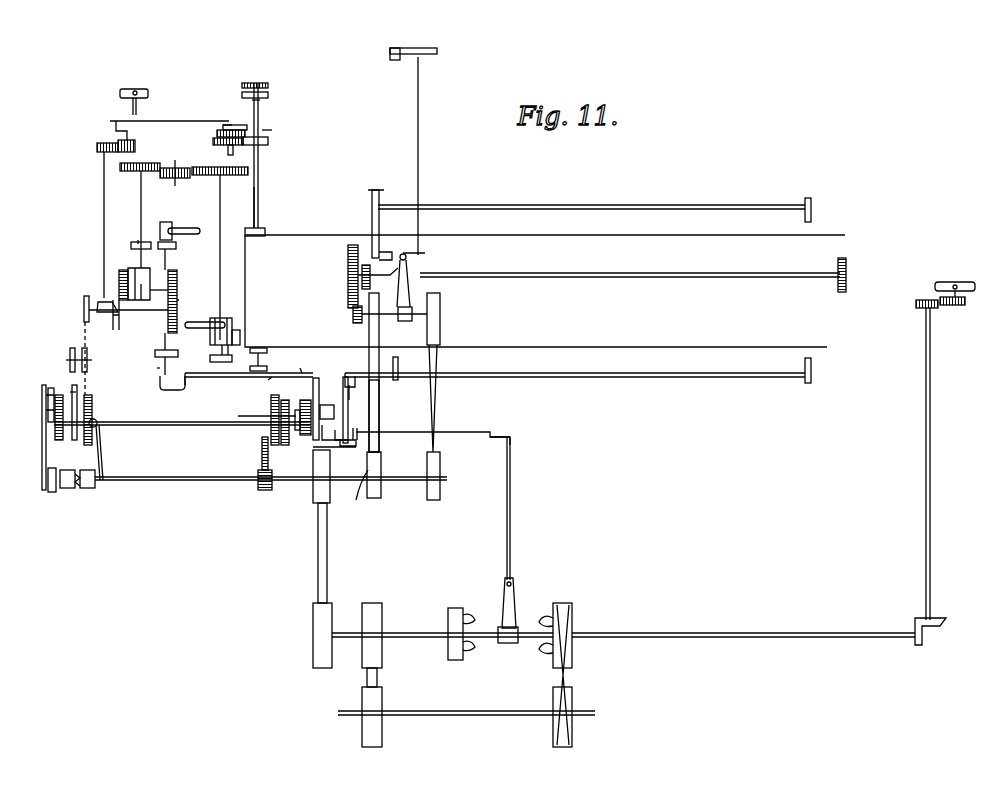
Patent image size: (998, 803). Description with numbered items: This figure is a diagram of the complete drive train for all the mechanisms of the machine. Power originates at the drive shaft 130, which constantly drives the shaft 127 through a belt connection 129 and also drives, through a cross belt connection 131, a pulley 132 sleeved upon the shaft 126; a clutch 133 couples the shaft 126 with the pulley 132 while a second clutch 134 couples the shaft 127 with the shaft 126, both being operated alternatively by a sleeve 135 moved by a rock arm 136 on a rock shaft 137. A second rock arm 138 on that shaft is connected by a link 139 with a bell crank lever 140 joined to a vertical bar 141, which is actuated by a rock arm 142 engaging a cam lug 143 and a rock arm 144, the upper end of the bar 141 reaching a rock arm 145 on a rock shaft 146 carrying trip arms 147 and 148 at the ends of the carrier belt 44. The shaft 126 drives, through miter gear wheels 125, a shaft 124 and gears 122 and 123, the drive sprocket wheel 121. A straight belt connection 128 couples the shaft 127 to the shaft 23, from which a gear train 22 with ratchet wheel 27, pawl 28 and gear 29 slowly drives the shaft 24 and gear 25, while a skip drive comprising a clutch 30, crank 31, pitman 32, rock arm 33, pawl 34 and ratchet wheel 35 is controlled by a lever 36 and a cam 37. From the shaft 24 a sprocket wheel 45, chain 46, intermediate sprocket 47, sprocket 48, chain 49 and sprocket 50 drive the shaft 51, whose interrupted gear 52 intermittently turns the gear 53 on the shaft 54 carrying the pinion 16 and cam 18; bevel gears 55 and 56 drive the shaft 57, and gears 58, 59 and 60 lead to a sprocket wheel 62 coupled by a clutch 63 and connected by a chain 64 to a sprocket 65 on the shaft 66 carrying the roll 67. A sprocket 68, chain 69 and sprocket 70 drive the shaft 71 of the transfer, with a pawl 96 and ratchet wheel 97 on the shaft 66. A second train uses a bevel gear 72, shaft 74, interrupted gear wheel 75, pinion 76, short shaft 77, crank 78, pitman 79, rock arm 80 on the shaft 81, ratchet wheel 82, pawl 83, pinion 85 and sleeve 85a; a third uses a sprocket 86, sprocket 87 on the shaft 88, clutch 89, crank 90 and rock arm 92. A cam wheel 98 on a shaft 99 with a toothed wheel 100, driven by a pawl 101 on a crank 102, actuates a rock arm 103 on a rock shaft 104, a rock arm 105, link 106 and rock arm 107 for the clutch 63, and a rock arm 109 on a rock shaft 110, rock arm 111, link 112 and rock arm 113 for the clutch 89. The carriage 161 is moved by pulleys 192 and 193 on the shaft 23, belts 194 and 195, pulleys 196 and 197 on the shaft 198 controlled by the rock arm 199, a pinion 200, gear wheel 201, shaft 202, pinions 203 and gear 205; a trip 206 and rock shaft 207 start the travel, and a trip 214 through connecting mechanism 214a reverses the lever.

The pinion 16 is at (117, 277).
The cam 18 is at (128, 271).
The gear train 22 is at (260, 455).
The shaft 23 is at (181, 482).
The shaft 24 is at (185, 427).
The gear 25 is at (93, 413).
The ratchet wheel 27 is at (265, 489).
The pawl 28 is at (280, 413).
The gear 29 is at (279, 409).
The clutch 30 is at (77, 487).
The crank 31 is at (53, 492).
The pitman 32 is at (41, 457).
The rock arm 33 is at (45, 410).
The pawl 34 is at (47, 397).
The ratchet wheel 35 is at (60, 442).
The lever 36 is at (104, 450).
The cam 37 is at (97, 420).
The carrier belt 44 is at (545, 291).
The sprocket wheel 45 is at (80, 398).
The chain 46 is at (72, 392).
The intermediate sprocket 47 is at (68, 357).
The sprocket 48 is at (88, 358).
The chain 49 is at (91, 341).
The sprocket 50 is at (82, 310).
The shaft 51 is at (160, 318).
The interrupted gear 52 is at (178, 301).
The gear 53 is at (178, 276).
The shaft 54 is at (140, 295).
The bevel gear 55 is at (155, 304).
The bevel gear 56 is at (138, 266).
The shaft 57 is at (143, 196).
The gear 58 is at (145, 162).
The gear 59 is at (178, 166).
The gear 60 is at (208, 166).
The sprocket wheel 62 is at (216, 364).
The clutch 63 is at (232, 326).
The chain 64 is at (234, 364).
The sprocket 65 is at (268, 363).
The shaft 66 is at (260, 212).
The roll 67 is at (266, 232).
The sprocket 68 is at (270, 94).
The chain 69 is at (178, 94).
The sprocket 70 is at (118, 93).
The shaft 71 is at (132, 104).
The bevel gear 72 is at (112, 326).
The shaft 74 is at (103, 210).
The interrupted gear wheel 75 is at (95, 150).
The pinion 76 is at (132, 141).
The short shaft 77 is at (115, 134).
The crank 78 is at (108, 123).
The pitman 79 is at (190, 108).
The rock arm 80 is at (236, 120).
The shaft 81 is at (236, 151).
The ratchet wheel 82 is at (270, 141).
The pawl 83 is at (246, 128).
The pinion 85 is at (268, 138).
The sleeve 85a is at (262, 110).
The sprocket 86 is at (138, 240).
The sprocket 87 is at (177, 243).
The shaft 88 is at (168, 258).
The clutch 89 is at (172, 222).
The crank 90 is at (157, 368).
The rock arm 92 is at (241, 340).
The pawl 96 is at (262, 88).
The ratchet wheel 97 is at (257, 81).
The cam wheel 98 is at (319, 382).
The shaft 99 is at (326, 405).
The toothed wheel 100 is at (253, 415).
The pawl 101 is at (305, 436).
The crank 102 is at (297, 432).
The rock arm 103 is at (342, 377).
The rock shaft 104 is at (291, 362).
The rock arm 105 is at (185, 383).
The link 106 is at (163, 344).
The rock arm 107 is at (207, 320).
The rock arm 109 is at (249, 369).
The rock shaft 110 is at (260, 383).
The rock arm 111 is at (165, 387).
The link 112 is at (167, 364).
The rock arm 113 is at (196, 229).
The drive sprocket wheel 121 is at (960, 280).
The gear 122 is at (962, 306).
The gear 123 is at (915, 307).
The shaft 124 is at (932, 400).
The miter gear wheels 125 is at (933, 628).
The shaft 126 is at (785, 640).
The shaft 127 is at (410, 630).
The straight belt connection 128 is at (317, 545).
The belt connection 129 is at (383, 670).
The drive shaft 130 is at (474, 718).
The cross belt connection 131 is at (575, 674).
The pulley 132 is at (575, 624).
The clutch 133 is at (541, 611).
The clutch 134 is at (470, 612).
The sleeve 135 is at (508, 644).
The rock arm 136 is at (516, 598).
The rock shaft 137 is at (511, 512).
The rock arm 138 is at (510, 434).
The link 139 is at (466, 431).
The bell crank lever 140 is at (352, 491).
The vertical bar 141 is at (350, 398).
The rock arm 142 is at (335, 445).
The cam lug 143 is at (348, 416).
The rock arm 144 is at (348, 428).
The rock arm 145 is at (349, 372).
The rock shaft 146 is at (522, 372).
The trip arm 147 is at (399, 368).
The trip arm 148 is at (804, 366).
The carriage 161 is at (221, 220).
The pulley 192 is at (383, 490).
The pulley 193 is at (441, 495).
The straight belt 194 is at (381, 438).
The cross belt 195 is at (436, 400).
The pulley 196 is at (368, 330).
The pulley 197 is at (441, 325).
The shaft 198 is at (395, 322).
The rock arm 199 is at (414, 265).
The pinion 200 is at (351, 316).
The gear wheel 201 is at (346, 291).
The shaft 202 is at (650, 279).
The pinions 203 is at (848, 270).
The gear 205 is at (366, 262).
The trip 206 is at (811, 215).
The rock shaft 207 is at (630, 204).
The trip 214 is at (425, 42).
The connecting mechanism 214a is at (416, 146).